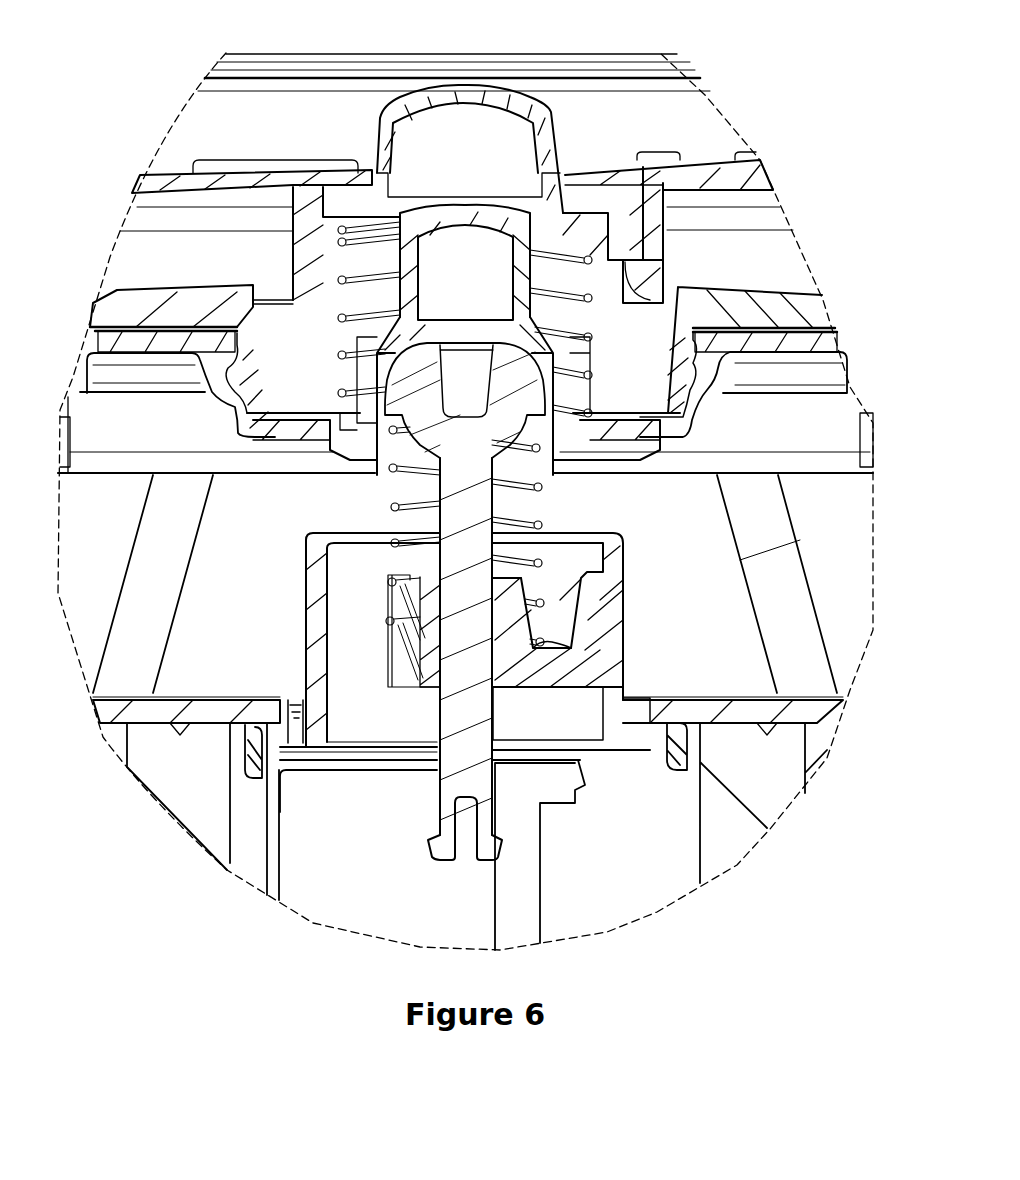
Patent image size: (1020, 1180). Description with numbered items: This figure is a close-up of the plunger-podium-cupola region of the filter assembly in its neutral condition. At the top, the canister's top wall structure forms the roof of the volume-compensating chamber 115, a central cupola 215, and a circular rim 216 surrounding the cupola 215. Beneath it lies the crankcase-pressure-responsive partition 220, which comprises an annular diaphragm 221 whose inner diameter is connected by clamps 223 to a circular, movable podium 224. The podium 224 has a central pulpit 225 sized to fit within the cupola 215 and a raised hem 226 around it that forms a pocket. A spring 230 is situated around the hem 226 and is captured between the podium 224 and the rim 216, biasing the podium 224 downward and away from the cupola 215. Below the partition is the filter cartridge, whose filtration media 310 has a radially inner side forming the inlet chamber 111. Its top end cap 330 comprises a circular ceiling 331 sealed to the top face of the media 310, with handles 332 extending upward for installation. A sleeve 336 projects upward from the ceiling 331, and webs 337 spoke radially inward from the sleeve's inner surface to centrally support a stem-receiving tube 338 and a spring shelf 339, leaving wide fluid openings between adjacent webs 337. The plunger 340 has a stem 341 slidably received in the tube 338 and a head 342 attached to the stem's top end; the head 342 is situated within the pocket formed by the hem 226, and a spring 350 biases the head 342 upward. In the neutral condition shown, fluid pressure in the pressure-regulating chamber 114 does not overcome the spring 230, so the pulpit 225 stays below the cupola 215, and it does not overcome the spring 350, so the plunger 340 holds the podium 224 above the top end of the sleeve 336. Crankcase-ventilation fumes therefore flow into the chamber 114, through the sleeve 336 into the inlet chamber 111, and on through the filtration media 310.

The inlet chamber 111 is at (335, 882).
The pressure-regulating chamber 114 is at (314, 523).
The volume-compensating chamber 115 is at (214, 275).
The cupola 215 is at (457, 93).
The rim 216 is at (310, 203).
The crankcase-pressure-responsive partition 220 is at (105, 341).
The annular diaphragm 221 is at (123, 332).
The clamps 223 is at (168, 313).
The podium 224 is at (262, 430).
The pulpit 225 is at (405, 272).
The hem 226 is at (367, 377).
The spring 230 is at (573, 257).
The filtration media 310 is at (737, 783).
The top end cap 330 is at (193, 697).
The ceiling 331 is at (737, 695).
The handles 332 is at (787, 588).
The sleeve 336 is at (318, 598).
The webs 337 is at (603, 623).
The stem-receiving tube 338 is at (427, 663).
The spring shelf 339 is at (557, 643).
The plunger 340 is at (482, 415).
The stem 341 is at (447, 635).
The head 342 is at (450, 455).
The spring 350 is at (523, 513).